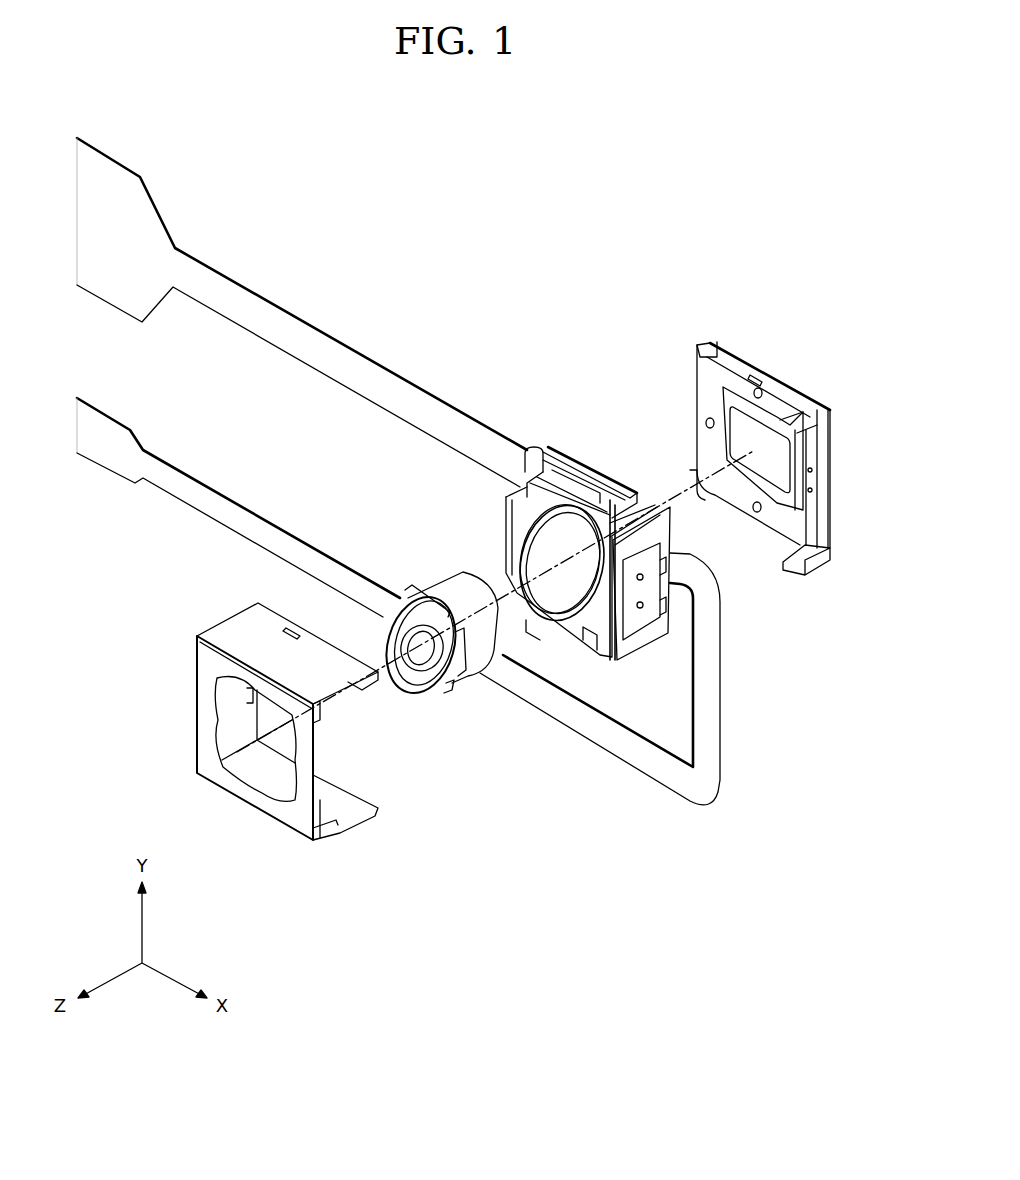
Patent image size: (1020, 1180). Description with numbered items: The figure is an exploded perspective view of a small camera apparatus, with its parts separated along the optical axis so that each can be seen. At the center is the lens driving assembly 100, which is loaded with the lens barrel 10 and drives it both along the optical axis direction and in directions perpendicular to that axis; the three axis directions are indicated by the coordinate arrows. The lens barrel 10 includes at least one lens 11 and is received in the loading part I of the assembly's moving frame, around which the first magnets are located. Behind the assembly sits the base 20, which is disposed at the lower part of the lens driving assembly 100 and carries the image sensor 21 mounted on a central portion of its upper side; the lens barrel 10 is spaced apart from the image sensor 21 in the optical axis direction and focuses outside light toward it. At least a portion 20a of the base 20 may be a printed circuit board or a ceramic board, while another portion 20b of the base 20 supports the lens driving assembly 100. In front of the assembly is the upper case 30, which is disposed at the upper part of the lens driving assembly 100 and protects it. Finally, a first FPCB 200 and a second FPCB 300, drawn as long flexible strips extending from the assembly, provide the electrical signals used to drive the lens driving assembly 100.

The lens barrel 10 is at (437, 681).
The lens 11 is at (425, 652).
The base 20 is at (785, 488).
The portion of the base 20a is at (744, 405).
The portion of the base 20b is at (800, 417).
The image sensor 21 is at (775, 470).
The upper case 30 is at (357, 813).
The lens driving assembly 100 is at (613, 598).
The first FPCB 200 is at (490, 440).
The second FPCB 300 is at (662, 780).
The loading part I is at (540, 538).